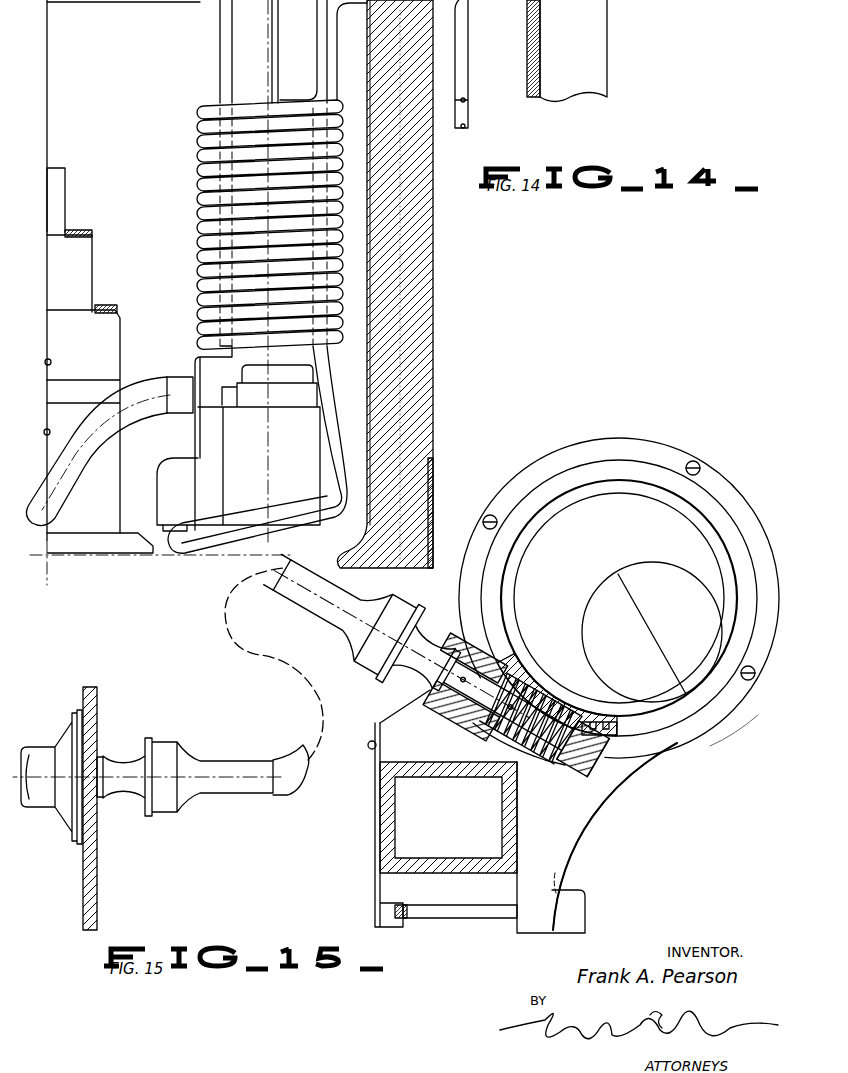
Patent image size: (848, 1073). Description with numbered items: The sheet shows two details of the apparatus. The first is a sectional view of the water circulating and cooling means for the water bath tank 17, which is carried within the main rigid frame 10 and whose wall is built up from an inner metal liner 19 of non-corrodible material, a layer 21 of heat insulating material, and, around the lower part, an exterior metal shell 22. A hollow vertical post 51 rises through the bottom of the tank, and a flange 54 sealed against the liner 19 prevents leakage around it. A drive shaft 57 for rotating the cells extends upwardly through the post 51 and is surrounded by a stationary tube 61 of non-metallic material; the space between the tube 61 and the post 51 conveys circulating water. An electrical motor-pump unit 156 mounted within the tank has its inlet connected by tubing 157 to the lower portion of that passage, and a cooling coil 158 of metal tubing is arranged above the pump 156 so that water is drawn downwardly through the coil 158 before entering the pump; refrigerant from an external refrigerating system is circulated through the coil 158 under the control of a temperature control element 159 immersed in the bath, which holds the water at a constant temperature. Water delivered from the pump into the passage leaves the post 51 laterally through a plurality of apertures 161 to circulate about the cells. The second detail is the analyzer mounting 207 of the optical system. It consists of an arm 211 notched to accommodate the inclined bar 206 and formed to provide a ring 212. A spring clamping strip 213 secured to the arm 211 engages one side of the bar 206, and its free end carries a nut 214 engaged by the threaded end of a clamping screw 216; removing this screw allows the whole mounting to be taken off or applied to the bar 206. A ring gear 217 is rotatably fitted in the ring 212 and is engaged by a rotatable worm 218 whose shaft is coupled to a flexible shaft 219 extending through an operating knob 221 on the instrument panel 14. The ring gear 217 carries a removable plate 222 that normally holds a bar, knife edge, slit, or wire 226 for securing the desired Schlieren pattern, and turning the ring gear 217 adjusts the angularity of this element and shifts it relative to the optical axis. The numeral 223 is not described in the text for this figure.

In FIG. 14, the main rigid frame 10 is at (607, 46).
In FIG. 15, the instrument panel 14 is at (96, 895).
In FIG. 14, the water tank 17 is at (433, 292).
In FIG. 14, the inner metal liner 19 is at (370, 232).
In FIG. 14, the layer of heat insulating material 21 is at (405, 256).
In FIG. 14, the exterior metal shell 22 is at (432, 470).
In FIG. 14, the vertical post 51 is at (115, 318).
In FIG. 14, the flange 54 is at (87, 550).
In FIG. 14, the drive shaft 57 is at (60, 187).
In FIG. 14, the stationary tube 61 is at (92, 240).
In FIG. 14, the electrical motor-pump unit 156 is at (240, 452).
In FIG. 14, the tubing 157 is at (150, 378).
In FIG. 14, the cooling coil 158 is at (197, 150).
In FIG. 14, the temperature control element 159 is at (272, 63).
In FIG. 14, the apertures 161 is at (51, 362).
In FIG. 15, the inclined bar 206 is at (452, 872).
In FIG. 15, the analyzer mounting 207 is at (700, 738).
In FIG. 15, the arm 211 is at (570, 833).
In FIG. 15, the ring 212 is at (640, 442).
In FIG. 15, the spring clamping strip 213 is at (375, 860).
In FIG. 15, the nut 214 is at (395, 920).
In FIG. 15, the clamping screw 216 is at (475, 920).
In FIG. 15, the ring gear 217 is at (545, 690).
In FIG. 15, the rotatable worm 218 is at (560, 765).
In FIG. 15, the flexible shaft 219 is at (290, 678).
In FIG. 15, the operating knob 221 is at (45, 745).
In FIG. 15, the removable plate 222 is at (690, 516).
In FIG. 15, the screw 223 is at (743, 690).
In FIG. 15, the wire 226 is at (670, 655).